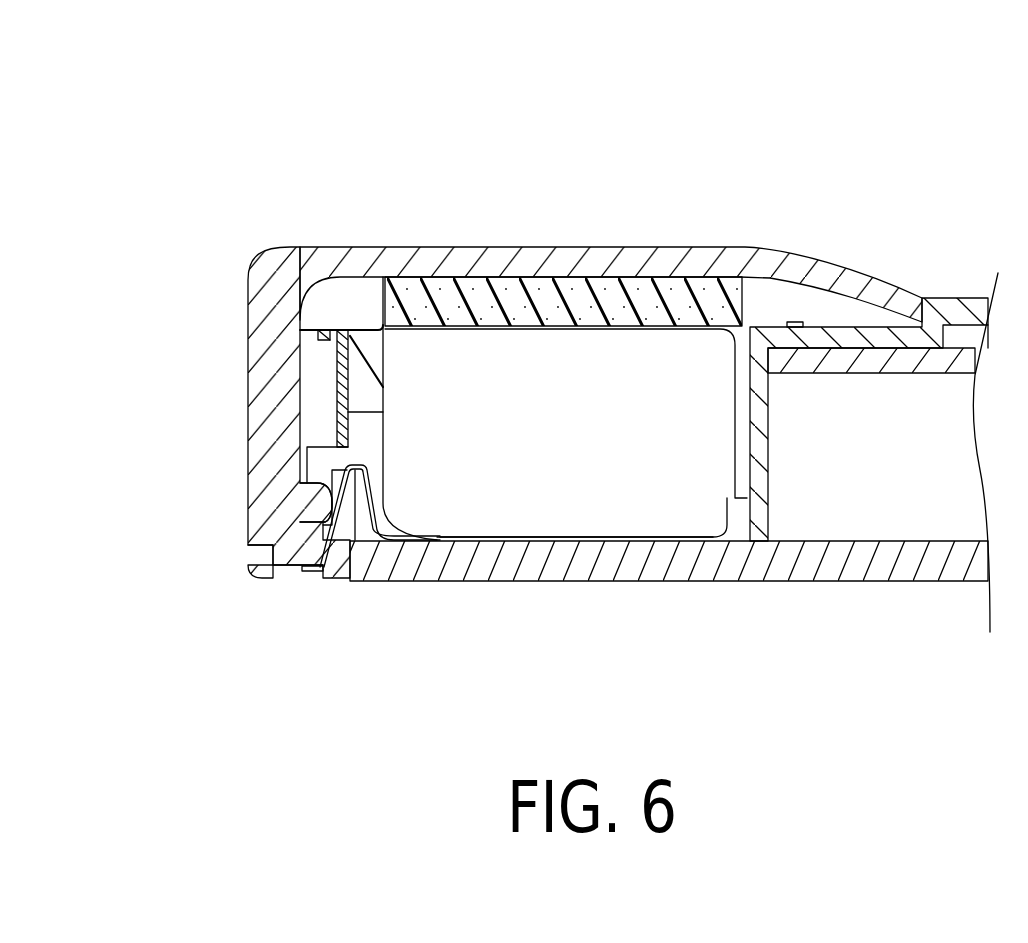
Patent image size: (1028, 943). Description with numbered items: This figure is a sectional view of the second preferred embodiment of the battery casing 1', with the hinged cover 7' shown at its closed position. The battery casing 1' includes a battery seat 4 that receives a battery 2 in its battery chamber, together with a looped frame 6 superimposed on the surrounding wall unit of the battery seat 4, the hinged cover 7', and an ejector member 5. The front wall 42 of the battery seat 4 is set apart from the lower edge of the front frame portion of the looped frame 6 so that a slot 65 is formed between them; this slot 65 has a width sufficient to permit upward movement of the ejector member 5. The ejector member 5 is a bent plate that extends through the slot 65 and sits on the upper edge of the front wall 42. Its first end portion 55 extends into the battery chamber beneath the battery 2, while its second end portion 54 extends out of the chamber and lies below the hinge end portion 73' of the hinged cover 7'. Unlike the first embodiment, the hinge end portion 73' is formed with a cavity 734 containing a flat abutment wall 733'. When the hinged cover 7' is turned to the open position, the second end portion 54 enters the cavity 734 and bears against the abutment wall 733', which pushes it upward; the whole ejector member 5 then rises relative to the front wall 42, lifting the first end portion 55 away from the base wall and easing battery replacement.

The battery casing 1' is at (557, 372).
The battery 2 is at (674, 360).
The battery seat 4 is at (600, 582).
The front wall 42 is at (358, 473).
The ejector member 5 is at (415, 538).
The second end portion 54 is at (308, 573).
The first end portion 55 is at (437, 510).
The looped frame 6 is at (363, 330).
The slot 65 is at (338, 447).
The hinged cover 7' is at (611, 225).
The hinge end portion 73' is at (290, 466).
The abutment wall 733' is at (224, 490).
The cavity 734 is at (265, 553).